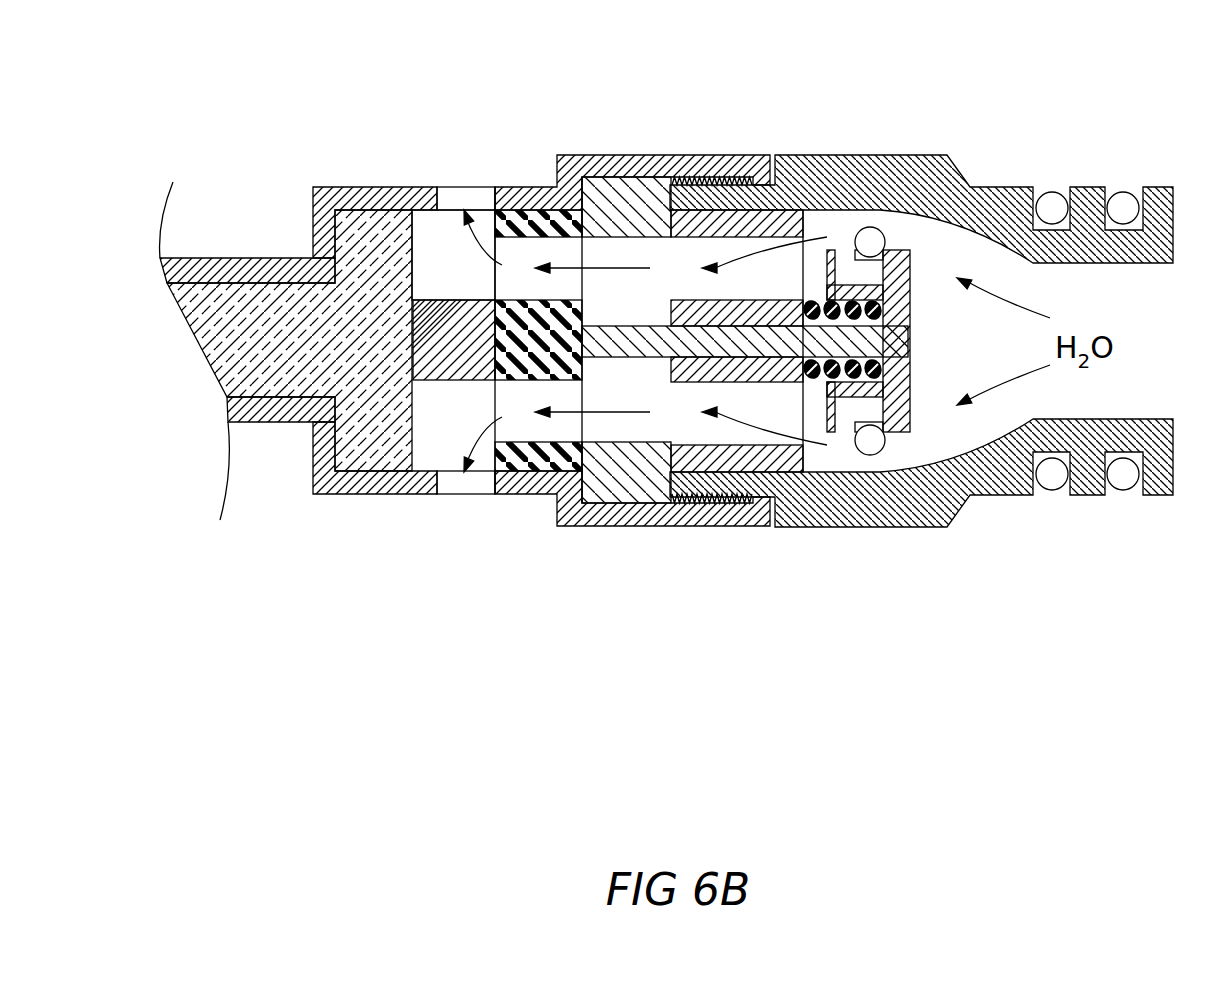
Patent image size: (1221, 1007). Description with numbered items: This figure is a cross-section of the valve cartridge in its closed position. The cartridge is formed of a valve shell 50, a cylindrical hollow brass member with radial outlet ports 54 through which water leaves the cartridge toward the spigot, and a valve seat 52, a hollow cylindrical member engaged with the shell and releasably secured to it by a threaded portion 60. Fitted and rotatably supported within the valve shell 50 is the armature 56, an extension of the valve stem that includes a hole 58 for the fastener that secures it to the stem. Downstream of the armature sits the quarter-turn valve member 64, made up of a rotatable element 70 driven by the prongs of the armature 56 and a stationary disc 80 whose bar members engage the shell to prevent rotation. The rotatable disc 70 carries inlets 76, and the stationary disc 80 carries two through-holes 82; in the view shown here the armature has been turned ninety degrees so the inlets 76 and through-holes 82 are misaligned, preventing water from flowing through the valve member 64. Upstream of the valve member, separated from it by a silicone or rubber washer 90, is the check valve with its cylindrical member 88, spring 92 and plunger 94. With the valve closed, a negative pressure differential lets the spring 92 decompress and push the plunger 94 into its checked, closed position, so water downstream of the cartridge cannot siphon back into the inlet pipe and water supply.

The valve shell 50 is at (617, 160).
The valve seat 52 is at (925, 527).
The outlet ports 54 is at (485, 195).
The armature 56 is at (363, 443).
The hole 58 is at (1122, 200).
The threaded portion 60 is at (730, 180).
The valve member 64 is at (497, 386).
The rotatable element 70 is at (437, 373).
The inlets 76 is at (432, 257).
The stationary disc 80 is at (537, 462).
The through-holes 82 is at (543, 250).
The cylindrical member 88 is at (728, 460).
The washer 90 is at (630, 478).
The spring 92 is at (830, 305).
The plunger 94 is at (908, 265).